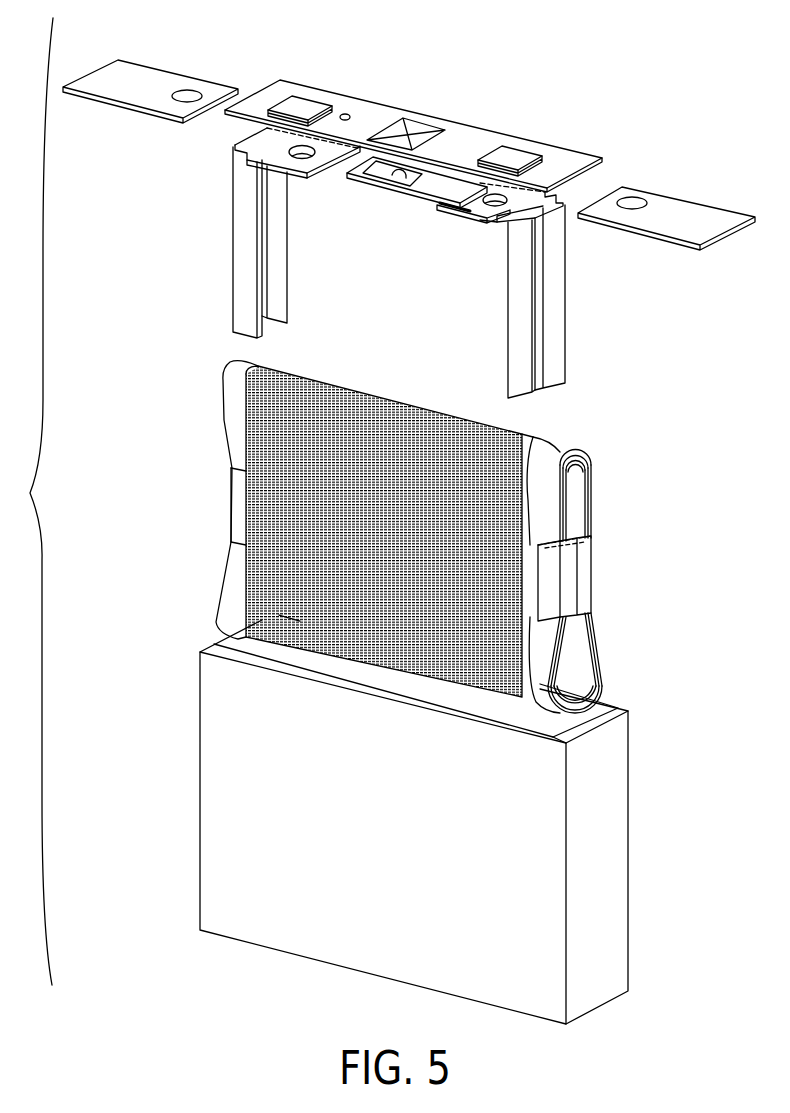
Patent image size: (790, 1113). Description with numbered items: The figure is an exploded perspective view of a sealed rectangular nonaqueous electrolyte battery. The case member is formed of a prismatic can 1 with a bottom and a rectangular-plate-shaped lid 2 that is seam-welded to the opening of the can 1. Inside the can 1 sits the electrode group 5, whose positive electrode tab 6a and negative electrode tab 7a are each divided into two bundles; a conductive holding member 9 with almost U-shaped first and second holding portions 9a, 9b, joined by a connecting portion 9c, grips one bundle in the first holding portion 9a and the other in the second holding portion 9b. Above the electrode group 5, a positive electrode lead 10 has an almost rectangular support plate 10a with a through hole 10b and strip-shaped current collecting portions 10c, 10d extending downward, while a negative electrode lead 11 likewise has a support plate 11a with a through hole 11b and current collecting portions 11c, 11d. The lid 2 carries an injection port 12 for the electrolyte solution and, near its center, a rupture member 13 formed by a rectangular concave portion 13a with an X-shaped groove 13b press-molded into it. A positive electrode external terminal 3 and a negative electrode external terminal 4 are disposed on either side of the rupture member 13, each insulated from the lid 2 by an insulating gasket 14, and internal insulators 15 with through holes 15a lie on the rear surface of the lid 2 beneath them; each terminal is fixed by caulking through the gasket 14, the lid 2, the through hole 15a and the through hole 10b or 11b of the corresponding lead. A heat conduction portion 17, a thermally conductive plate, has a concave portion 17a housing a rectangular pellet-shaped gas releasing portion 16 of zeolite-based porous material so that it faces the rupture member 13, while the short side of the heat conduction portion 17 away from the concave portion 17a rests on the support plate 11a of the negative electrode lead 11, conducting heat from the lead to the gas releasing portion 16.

The can 1 is at (620, 853).
The lid 2 is at (565, 150).
The positive electrode external terminal 3 is at (296, 100).
The negative electrode external terminal 4 is at (510, 152).
The electrode group 5 is at (516, 620).
The positive electrode tab 6a is at (228, 414).
The negative electrode tab 7a is at (583, 476).
The conductive holding member 9 is at (226, 531).
The first holding portion 9a is at (232, 497).
The second holding portion 9b is at (575, 574).
The connecting portion 9c is at (578, 538).
The positive electrode lead 10 is at (265, 233).
The support plate 10a is at (304, 181).
The through hole 10b is at (300, 158).
The current collecting portion 10c is at (240, 208).
The current collecting portion 10d is at (270, 244).
The negative electrode lead 11 is at (532, 290).
The support plate 11a is at (472, 212).
The through hole 11b is at (493, 208).
The current collecting portion 11c is at (520, 352).
The current collecting portion 11d is at (555, 318).
The injection port 12 is at (347, 112).
The rupture member 13 is at (427, 104).
The concave portion 13a is at (420, 125).
The groove 13b is at (388, 133).
The insulating gasket 14 is at (322, 105).
The internal insulator 15 is at (409, 129).
The through hole 15a is at (189, 91).
The gas releasing portion 16 is at (369, 175).
The heat conduction portion 17 is at (417, 231).
The concave portion 17a is at (400, 180).